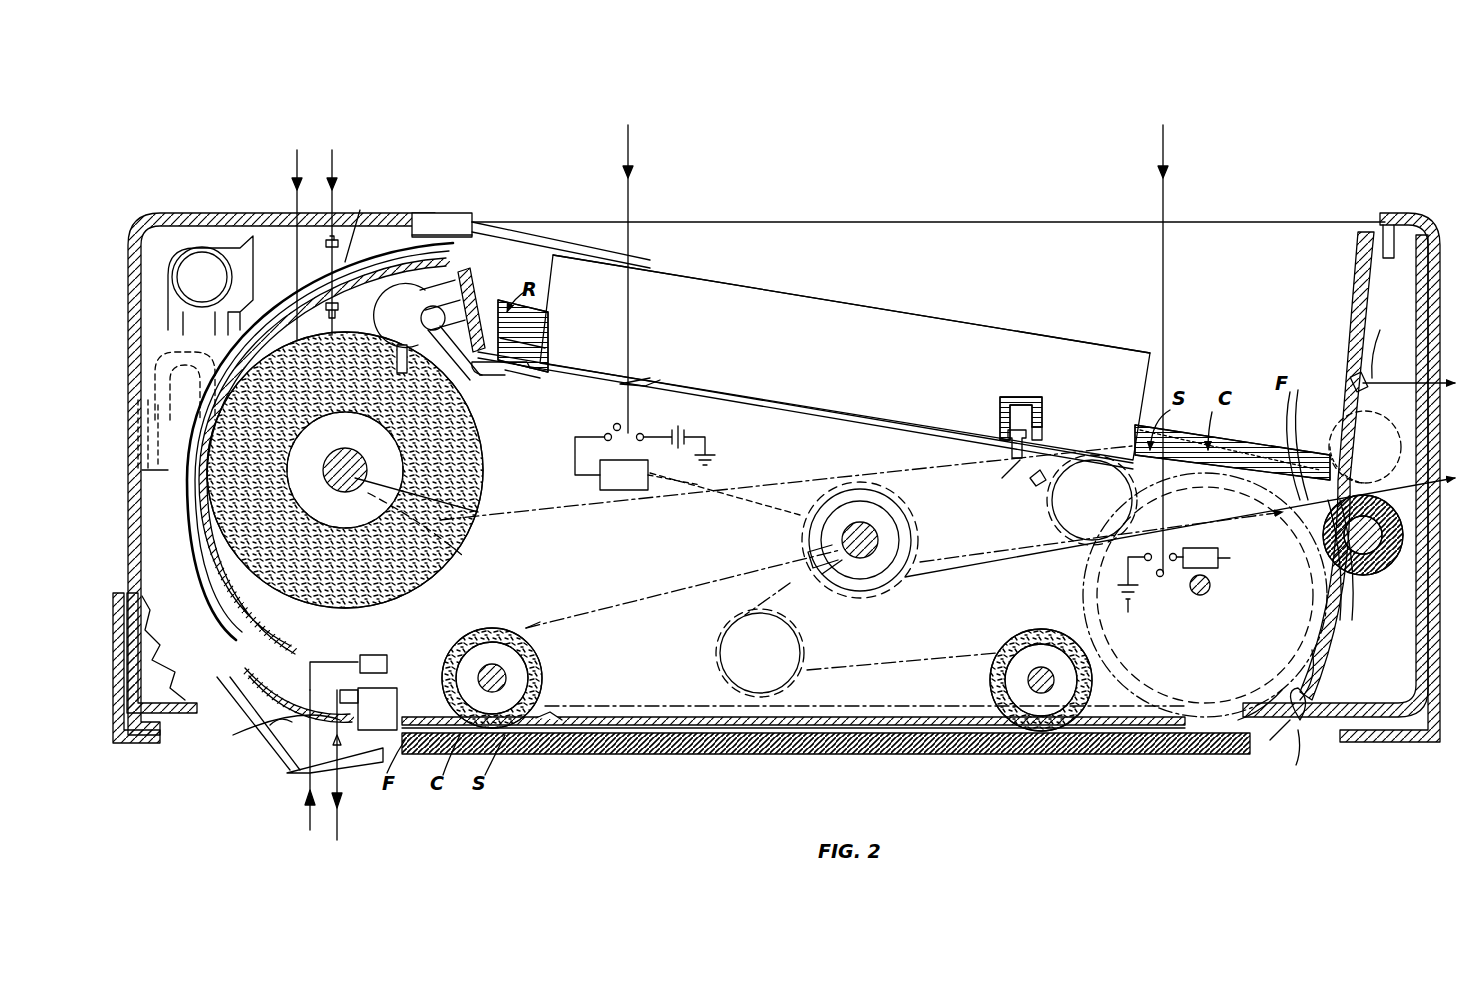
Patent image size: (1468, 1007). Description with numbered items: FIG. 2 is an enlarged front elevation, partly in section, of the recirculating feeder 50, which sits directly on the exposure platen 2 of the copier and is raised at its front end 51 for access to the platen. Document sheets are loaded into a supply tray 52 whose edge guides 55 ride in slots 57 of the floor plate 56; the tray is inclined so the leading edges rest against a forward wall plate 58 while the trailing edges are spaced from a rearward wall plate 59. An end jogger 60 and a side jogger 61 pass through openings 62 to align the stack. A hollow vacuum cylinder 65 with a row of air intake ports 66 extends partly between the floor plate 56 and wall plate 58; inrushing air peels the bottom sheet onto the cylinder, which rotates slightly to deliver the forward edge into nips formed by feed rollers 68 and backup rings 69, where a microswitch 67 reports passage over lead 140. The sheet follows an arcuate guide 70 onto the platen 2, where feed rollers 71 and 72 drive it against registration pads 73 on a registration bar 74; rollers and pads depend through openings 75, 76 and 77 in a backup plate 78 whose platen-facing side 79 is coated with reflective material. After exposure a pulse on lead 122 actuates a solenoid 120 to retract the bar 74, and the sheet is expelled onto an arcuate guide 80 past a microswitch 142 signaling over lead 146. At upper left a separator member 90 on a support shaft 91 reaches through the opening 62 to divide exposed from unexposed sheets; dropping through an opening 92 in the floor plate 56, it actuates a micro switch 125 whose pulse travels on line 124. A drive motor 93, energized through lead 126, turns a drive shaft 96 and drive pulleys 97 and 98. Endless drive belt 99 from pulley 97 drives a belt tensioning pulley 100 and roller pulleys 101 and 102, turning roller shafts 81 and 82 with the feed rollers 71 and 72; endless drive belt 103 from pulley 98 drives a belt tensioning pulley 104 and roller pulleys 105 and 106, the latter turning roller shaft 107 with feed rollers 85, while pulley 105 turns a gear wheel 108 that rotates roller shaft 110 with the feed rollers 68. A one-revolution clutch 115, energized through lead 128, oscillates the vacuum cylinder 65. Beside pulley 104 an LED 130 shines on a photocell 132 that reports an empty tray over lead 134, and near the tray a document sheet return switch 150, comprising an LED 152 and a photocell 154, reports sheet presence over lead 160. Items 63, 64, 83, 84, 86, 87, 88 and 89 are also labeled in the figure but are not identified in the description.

The exposure platen 2 is at (945, 758).
The recirculating feeder 50 is at (185, 775).
The front end 51 is at (148, 575).
The supply tray 52 is at (862, 303).
The edge guides 55 is at (838, 366).
The floor plate 56 is at (593, 378).
The slots 57 is at (655, 372).
The forward wall plate 58 is at (1356, 247).
The rearward wall plate 59 is at (483, 313).
The end jogger 60 is at (427, 320).
The side jogger 61 is at (992, 475).
The openings 62 is at (512, 295).
The bracket 63 is at (1000, 400).
The pin 64 is at (1005, 450).
The vacuum cylinder 65 is at (1216, 647).
The air intake ports 66 is at (1221, 523).
The microswitch 67 is at (1290, 512).
The feed rollers 68 is at (1325, 570).
The backup rings 69 is at (1305, 650).
The arcuate guide 70 is at (1277, 735).
The feed rollers 71 is at (1036, 628).
The feed rollers 72 is at (490, 630).
The registration pads 73 is at (390, 719).
The registration bar 74 is at (372, 660).
The opening 75 is at (1000, 726).
The opening 76 is at (530, 728).
The opening 77 is at (405, 700).
The backup plate 78 is at (752, 738).
The side 79 is at (838, 728).
The arcuate guide 80 is at (275, 735).
The roller shaft 81 is at (1028, 678).
The roller shaft 82 is at (505, 677).
The guide belt 83 is at (175, 540).
The hinge 84 is at (200, 437).
The feed rollers 85 is at (485, 467).
The spring 86 is at (150, 357).
The lamp 87 is at (214, 287).
The lip plate 88 is at (570, 250).
The lever 89 is at (455, 300).
The separator member 90 is at (520, 345).
The support shaft 91 is at (490, 373).
The opening 92 is at (528, 380).
The drive motor 93 is at (636, 488).
The drive shaft 96 is at (810, 556).
The drive pulley 97 is at (828, 568).
The drive pulley 98 is at (830, 492).
The endless drive belt 99 is at (648, 586).
The belt tensioning pulley 100 is at (730, 622).
The roller pulley 101 is at (1028, 650).
The roller pulley 102 is at (528, 636).
The endless drive belt 103 is at (1040, 512).
The belt tensioning pulley 104 is at (1068, 497).
The roller pulley 105 is at (1235, 433).
The roller pulley 106 is at (450, 556).
The roller shaft 107 is at (470, 515).
The gear wheel 108 is at (1380, 378).
The roller shaft 110 is at (1352, 575).
The one-revolution clutch 115 is at (1193, 580).
The solenoid 120 is at (360, 658).
The lead 122 is at (306, 810).
The line 124 is at (293, 170).
The micro switch 125 is at (478, 380).
The lead 126 is at (631, 190).
The lead 128 is at (1166, 155).
The LED 130 is at (1042, 470).
The photocell 132 is at (1376, 349).
The lead 134 is at (1387, 382).
The lead 140 is at (1385, 565).
The microswitch 142 is at (300, 760).
The lead 146 is at (340, 822).
The document sheet return switch 150 is at (338, 248).
The LED 152 is at (340, 312).
The photocell 154 is at (368, 220).
The lead 160 is at (336, 163).